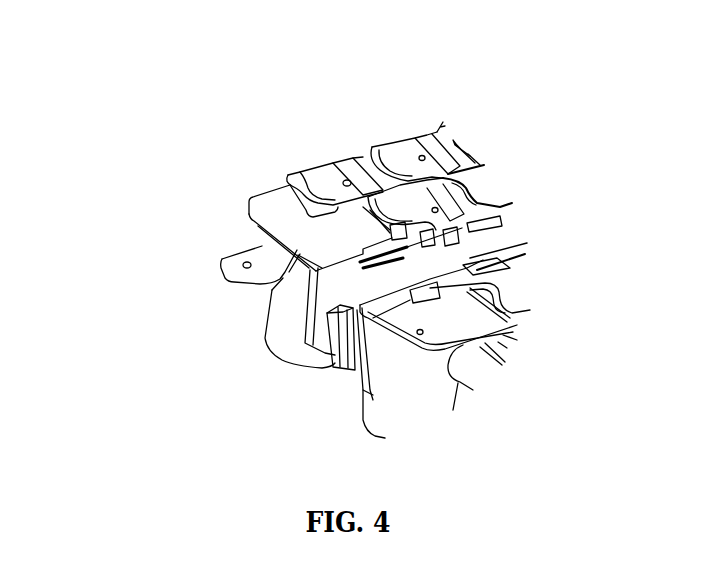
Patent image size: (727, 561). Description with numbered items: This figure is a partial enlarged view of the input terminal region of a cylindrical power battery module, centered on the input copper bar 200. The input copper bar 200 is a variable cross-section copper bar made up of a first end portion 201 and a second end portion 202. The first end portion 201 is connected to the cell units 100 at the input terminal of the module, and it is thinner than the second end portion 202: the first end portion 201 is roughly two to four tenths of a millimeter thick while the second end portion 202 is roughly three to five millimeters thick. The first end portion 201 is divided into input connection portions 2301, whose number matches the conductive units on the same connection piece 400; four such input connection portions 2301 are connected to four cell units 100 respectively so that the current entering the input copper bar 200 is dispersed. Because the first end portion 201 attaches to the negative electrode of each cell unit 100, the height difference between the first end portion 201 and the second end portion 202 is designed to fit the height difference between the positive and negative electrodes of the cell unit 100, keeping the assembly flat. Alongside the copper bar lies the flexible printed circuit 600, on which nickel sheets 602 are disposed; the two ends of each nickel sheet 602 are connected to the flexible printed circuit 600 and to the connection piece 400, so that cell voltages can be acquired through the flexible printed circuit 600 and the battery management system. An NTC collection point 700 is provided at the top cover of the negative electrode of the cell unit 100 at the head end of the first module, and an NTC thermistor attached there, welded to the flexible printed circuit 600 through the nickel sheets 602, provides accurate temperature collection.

The cell unit 100 is at (255, 371).
The input copper bar 200 is at (236, 182).
The first end portion of the input copper bar 201 is at (295, 111).
The input connection portion 2301 is at (295, 111).
The second end portion of the input copper bar 202 is at (165, 262).
The connection piece 400 is at (436, 151).
The flexible printed circuit 600 is at (513, 331).
The nickel sheet 602 is at (535, 202).
The NTC collection point 700 is at (222, 323).